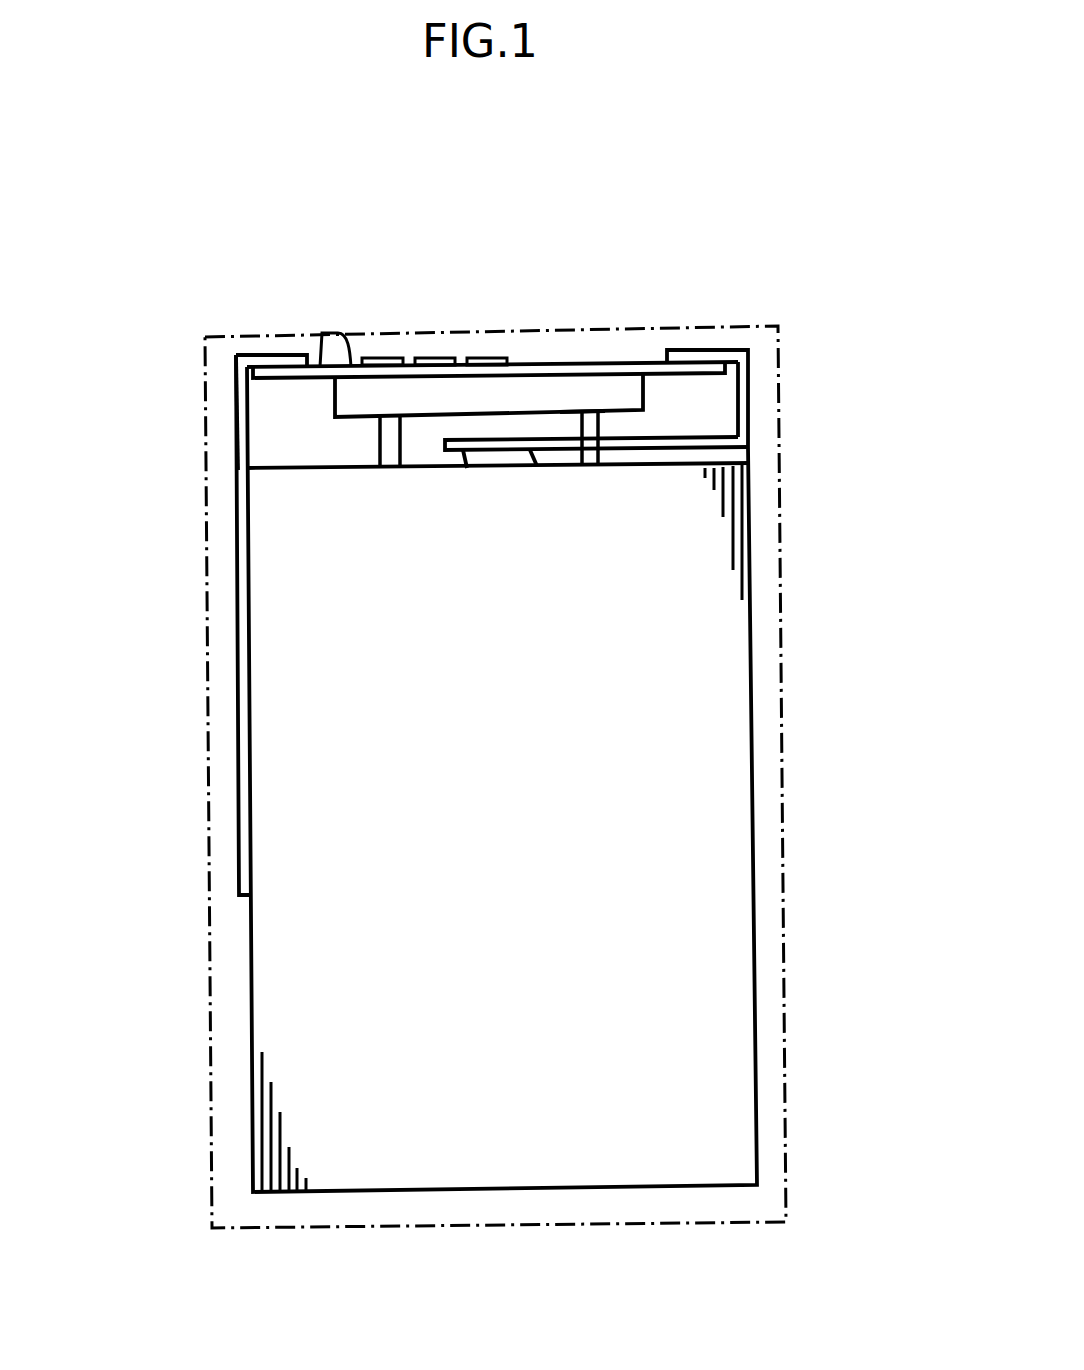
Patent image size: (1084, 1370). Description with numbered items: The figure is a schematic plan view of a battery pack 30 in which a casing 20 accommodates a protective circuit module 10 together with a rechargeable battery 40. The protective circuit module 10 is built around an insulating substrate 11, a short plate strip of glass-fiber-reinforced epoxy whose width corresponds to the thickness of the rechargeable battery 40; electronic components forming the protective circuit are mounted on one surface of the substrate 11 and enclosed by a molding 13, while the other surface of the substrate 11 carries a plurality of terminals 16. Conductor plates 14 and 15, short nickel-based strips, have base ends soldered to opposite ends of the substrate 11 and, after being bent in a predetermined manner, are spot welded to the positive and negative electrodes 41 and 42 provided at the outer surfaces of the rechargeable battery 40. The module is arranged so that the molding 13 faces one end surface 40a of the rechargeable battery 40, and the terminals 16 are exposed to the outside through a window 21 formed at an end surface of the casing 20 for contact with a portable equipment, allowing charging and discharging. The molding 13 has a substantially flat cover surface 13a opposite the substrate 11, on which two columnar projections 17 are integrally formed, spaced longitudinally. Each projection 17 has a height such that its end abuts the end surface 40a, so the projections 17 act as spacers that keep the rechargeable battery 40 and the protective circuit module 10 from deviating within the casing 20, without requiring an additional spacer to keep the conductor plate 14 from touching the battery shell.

The protective circuit module 10 is at (640, 363).
The insulating substrate 11 is at (317, 367).
The molding 13 is at (434, 415).
The cover surface 13a is at (573, 412).
The conductor plate 14 is at (749, 377).
The conductor plate 15 is at (236, 416).
The terminals 16 is at (483, 358).
The projections 17 is at (385, 443).
The casing 20 is at (780, 527).
The window 21 is at (523, 345).
The battery pack 30 is at (798, 400).
The rechargeable battery 40 is at (733, 788).
The end surface 40a is at (315, 467).
The positive electrode 41 is at (507, 467).
The negative electrode 42 is at (250, 732).